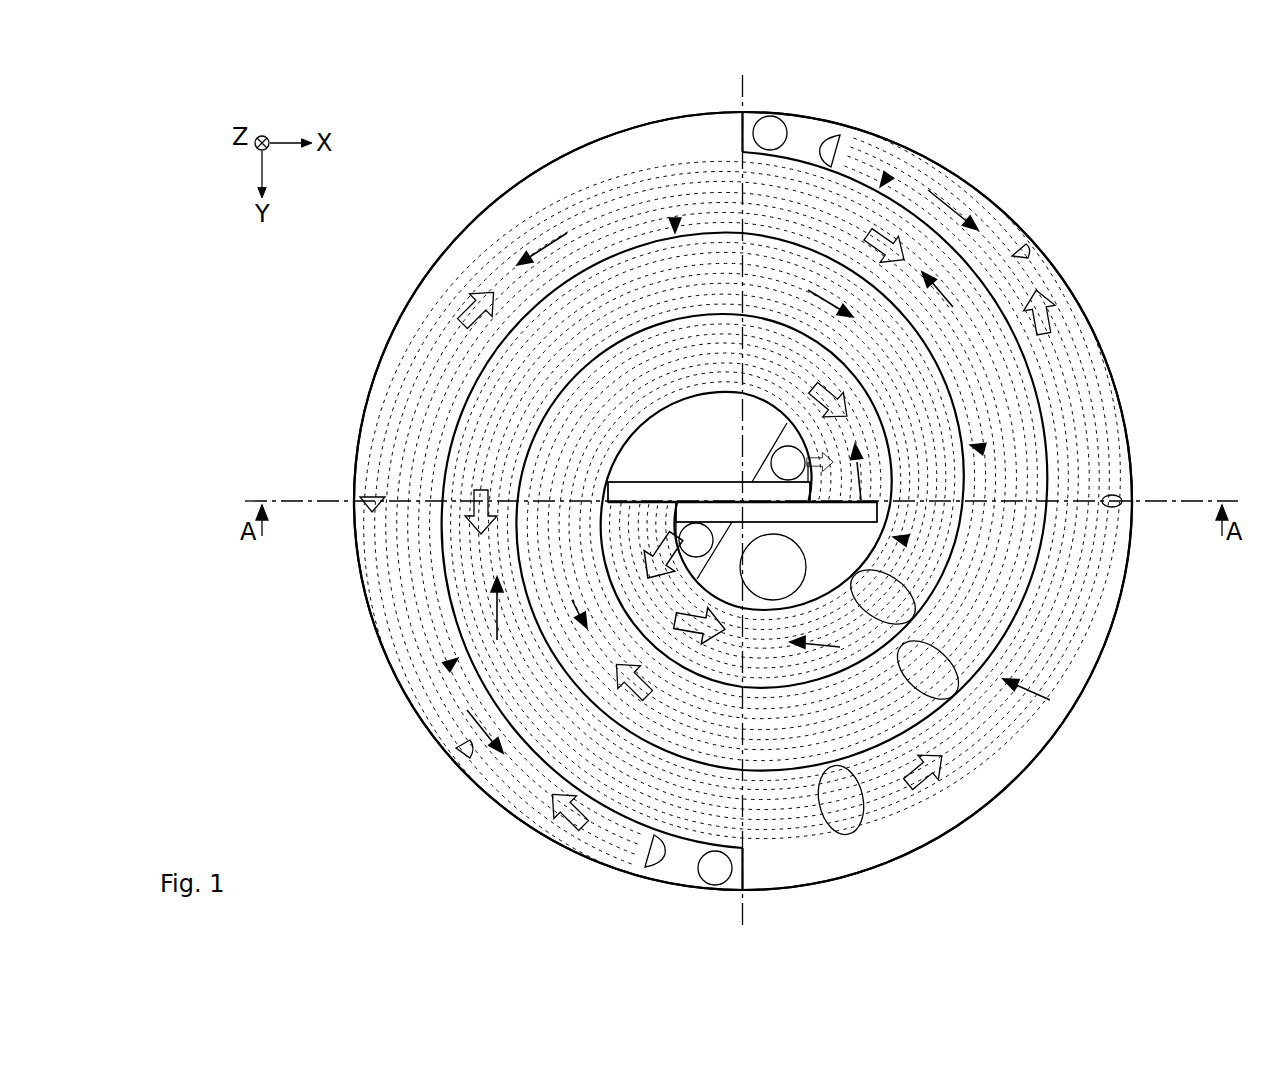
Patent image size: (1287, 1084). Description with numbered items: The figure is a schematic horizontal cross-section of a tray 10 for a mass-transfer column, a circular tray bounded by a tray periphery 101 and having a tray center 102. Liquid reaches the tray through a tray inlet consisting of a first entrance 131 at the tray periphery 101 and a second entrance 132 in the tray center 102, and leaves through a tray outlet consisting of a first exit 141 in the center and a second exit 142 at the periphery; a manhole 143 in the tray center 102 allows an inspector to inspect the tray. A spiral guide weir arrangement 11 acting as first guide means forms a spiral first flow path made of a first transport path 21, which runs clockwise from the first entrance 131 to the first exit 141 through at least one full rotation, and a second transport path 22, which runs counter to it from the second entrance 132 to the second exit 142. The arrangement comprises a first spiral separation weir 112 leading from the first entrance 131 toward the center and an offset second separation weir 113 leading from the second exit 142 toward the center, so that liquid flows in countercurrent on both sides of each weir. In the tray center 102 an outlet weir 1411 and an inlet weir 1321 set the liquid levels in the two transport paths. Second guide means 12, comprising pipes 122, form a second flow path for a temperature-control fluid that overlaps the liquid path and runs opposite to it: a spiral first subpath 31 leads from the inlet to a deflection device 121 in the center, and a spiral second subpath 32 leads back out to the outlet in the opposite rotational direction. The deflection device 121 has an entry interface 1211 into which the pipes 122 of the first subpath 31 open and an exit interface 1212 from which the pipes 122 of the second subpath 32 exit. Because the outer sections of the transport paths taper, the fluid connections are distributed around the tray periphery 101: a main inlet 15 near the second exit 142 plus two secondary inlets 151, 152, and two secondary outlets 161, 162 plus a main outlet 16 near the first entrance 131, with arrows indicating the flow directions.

The tray 10 is at (1182, 211).
The spiral guide weir arrangement 11 is at (882, 175).
The second guide means 12 is at (847, 836).
The main inlet 15 is at (833, 140).
The main outlet 16 is at (654, 868).
The first transport path 21 is at (462, 290).
The second transport path 22 is at (1058, 302).
The first subpath 31 is at (945, 192).
The second subpath 32 is at (560, 230).
The tray periphery 101 is at (868, 130).
The tray center 102 is at (741, 497).
The first spiral separation weir 112 is at (980, 353).
The second separation weir 113 is at (1000, 298).
The deflection device 121 is at (674, 490).
The pipes 122 is at (878, 822).
The first entrance 131 is at (714, 885).
The second entrance 132 is at (680, 538).
The first exit 141 is at (772, 456).
The second exit 142 is at (772, 117).
The manhole 143 is at (796, 540).
The secondary inlet 151 is at (1022, 248).
The secondary inlet 152 is at (1118, 498).
The secondary outlet 161 is at (460, 762).
The secondary outlet 162 is at (362, 510).
The entry interface 1211 is at (627, 496).
The exit interface 1212 is at (855, 510).
The inlet weir 1321 is at (722, 540).
The outlet weir 1411 is at (780, 435).